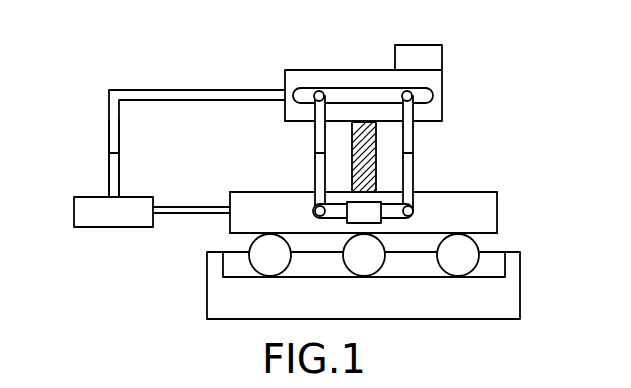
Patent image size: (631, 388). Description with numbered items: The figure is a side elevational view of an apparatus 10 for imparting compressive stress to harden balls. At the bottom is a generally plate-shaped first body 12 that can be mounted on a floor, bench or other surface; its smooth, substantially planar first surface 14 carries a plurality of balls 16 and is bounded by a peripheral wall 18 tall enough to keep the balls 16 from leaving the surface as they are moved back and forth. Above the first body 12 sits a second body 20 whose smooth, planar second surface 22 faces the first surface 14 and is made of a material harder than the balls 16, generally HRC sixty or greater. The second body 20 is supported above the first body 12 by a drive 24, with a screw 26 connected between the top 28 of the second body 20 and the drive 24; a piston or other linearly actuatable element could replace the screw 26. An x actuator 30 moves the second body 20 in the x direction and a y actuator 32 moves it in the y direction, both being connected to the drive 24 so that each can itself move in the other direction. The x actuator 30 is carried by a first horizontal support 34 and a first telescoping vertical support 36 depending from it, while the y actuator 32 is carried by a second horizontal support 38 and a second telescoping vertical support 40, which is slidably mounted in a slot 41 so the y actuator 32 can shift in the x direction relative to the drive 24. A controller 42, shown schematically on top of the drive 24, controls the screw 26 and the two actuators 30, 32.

The apparatus 10 is at (526, 95).
The first body 12 is at (516, 305).
The first surface 14 is at (238, 275).
The balls 16 is at (458, 270).
The peripheral wall 18 is at (515, 262).
The second body 20 is at (497, 207).
The second surface 22 is at (484, 233).
The drive 24 is at (442, 78).
The screw 26 is at (370, 144).
The top 28 is at (471, 192).
The x actuator 30 is at (86, 228).
The y actuator 32 is at (352, 203).
The first horizontal support 34 is at (183, 92).
The first telescoping vertical support 36 is at (110, 137).
The second horizontal support 38 is at (319, 91).
The second telescoping vertical support 40 is at (316, 133).
The slot 41 is at (357, 89).
The controller 42 is at (438, 58).